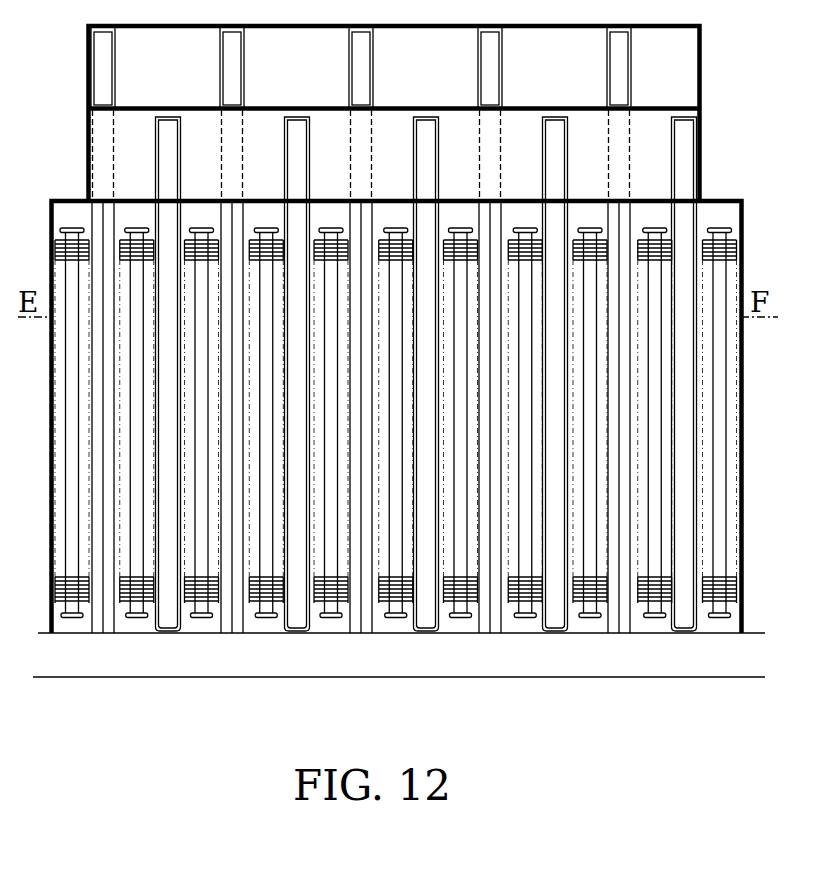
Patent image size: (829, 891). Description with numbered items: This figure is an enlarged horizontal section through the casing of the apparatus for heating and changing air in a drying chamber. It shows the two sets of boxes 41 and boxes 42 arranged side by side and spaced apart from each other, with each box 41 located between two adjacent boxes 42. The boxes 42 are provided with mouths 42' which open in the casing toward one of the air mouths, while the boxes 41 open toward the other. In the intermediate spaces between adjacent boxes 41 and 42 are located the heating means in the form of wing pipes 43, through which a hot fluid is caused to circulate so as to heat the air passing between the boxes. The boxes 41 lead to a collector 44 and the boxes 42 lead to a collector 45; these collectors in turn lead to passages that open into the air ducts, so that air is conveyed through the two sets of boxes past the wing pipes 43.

The boxes 41 is at (102, 77).
The boxes 42 is at (413, 374).
The mouths 42' is at (301, 416).
The wing pipes 43 is at (135, 402).
The collector 44 is at (394, 113).
The collector 45 is at (394, 133).